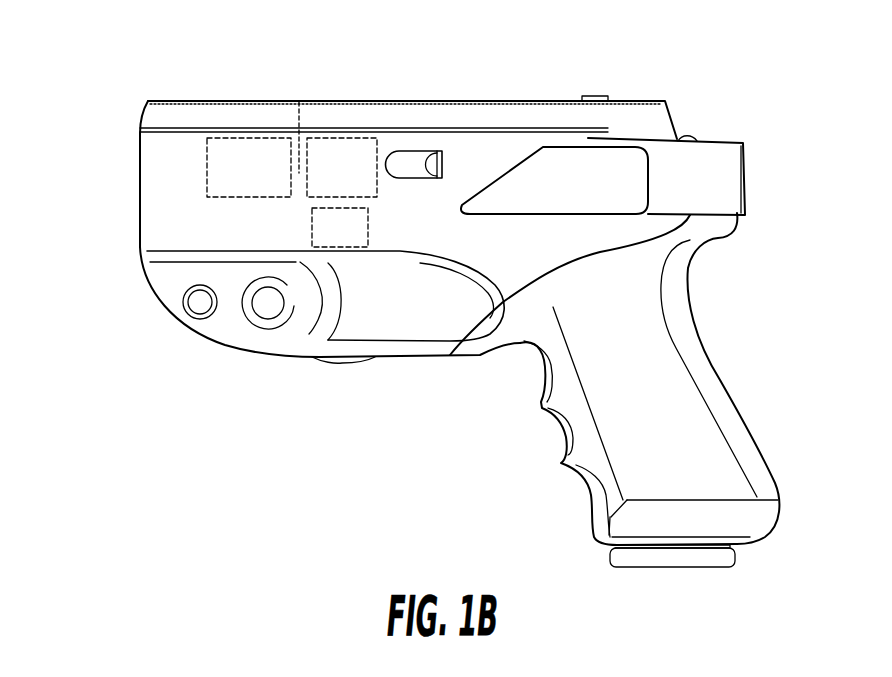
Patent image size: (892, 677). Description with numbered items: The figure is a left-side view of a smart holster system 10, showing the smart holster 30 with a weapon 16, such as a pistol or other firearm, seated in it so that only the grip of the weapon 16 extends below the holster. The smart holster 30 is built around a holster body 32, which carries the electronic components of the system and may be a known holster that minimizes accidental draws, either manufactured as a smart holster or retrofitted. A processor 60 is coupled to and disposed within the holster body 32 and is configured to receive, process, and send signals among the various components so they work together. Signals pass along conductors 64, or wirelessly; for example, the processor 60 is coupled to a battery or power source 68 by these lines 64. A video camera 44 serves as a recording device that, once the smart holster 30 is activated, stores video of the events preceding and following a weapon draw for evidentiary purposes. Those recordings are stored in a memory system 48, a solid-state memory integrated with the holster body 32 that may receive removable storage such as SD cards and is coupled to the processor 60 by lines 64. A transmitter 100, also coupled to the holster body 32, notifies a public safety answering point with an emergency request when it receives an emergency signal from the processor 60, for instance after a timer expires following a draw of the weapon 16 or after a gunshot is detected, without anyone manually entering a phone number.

The smart holster system 10 is at (123, 78).
The weapon 16 is at (687, 397).
The smart holster 30 is at (410, 113).
The holster body 32 is at (407, 318).
The video camera 44 is at (593, 93).
The memory system 48 is at (410, 165).
The processor 60 is at (352, 182).
The conductors 64 is at (300, 120).
The power source 68 is at (259, 182).
The transmitter 100 is at (357, 243).